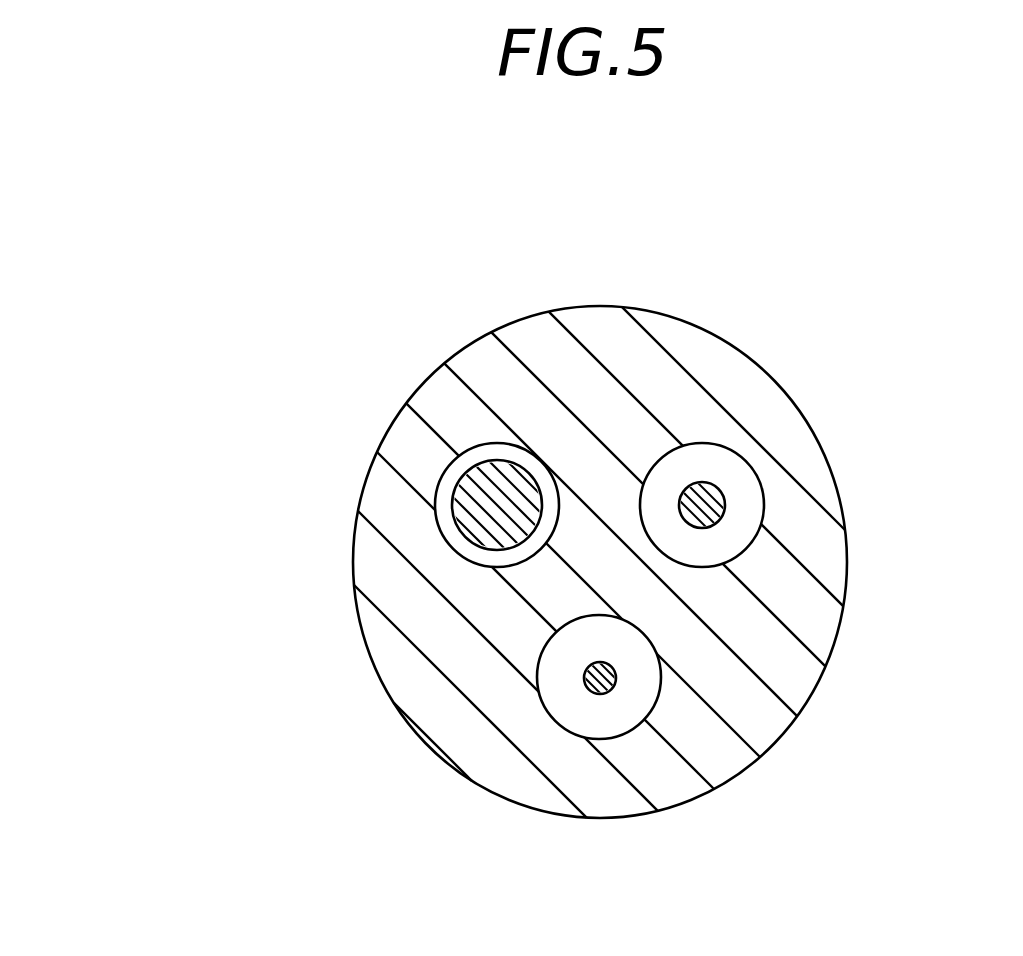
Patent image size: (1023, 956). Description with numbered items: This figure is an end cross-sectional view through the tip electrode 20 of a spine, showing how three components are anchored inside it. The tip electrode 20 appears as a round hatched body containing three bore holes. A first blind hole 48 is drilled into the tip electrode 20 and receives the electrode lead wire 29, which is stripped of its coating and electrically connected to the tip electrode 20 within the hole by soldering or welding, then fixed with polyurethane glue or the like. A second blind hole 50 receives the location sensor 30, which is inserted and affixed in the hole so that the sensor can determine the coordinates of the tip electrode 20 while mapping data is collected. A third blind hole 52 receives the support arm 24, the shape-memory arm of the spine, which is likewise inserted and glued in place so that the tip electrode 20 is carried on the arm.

The tip electrode 20 is at (680, 319).
The location sensor 30 is at (457, 468).
The second blind hole 50 is at (437, 527).
The electrode lead wire 29 is at (725, 503).
The first blind hole 48 is at (747, 552).
The third blind hole 52 is at (541, 657).
The support arm 24 is at (588, 685).